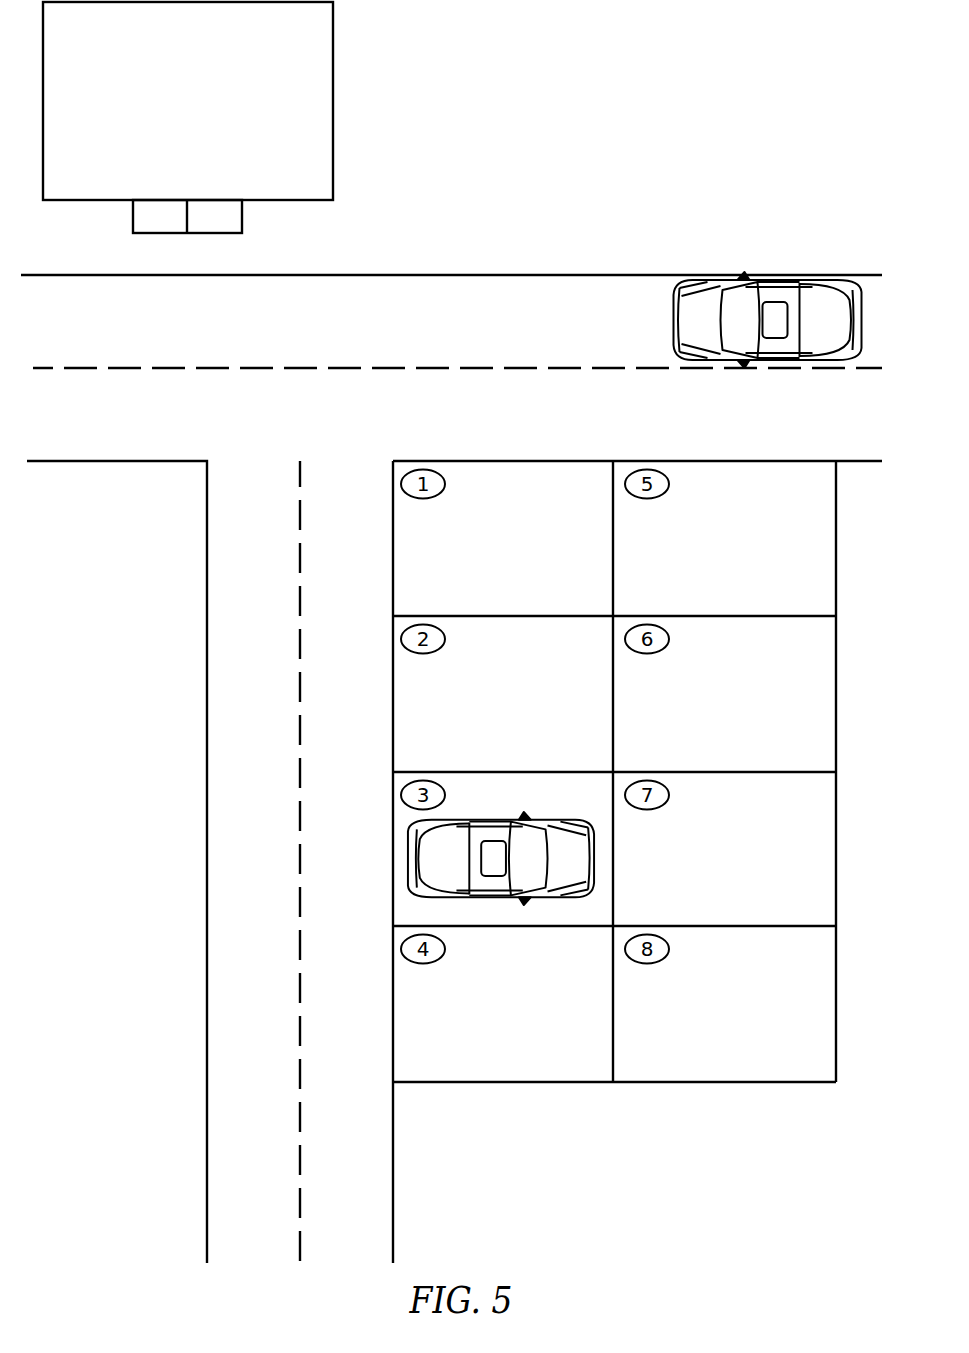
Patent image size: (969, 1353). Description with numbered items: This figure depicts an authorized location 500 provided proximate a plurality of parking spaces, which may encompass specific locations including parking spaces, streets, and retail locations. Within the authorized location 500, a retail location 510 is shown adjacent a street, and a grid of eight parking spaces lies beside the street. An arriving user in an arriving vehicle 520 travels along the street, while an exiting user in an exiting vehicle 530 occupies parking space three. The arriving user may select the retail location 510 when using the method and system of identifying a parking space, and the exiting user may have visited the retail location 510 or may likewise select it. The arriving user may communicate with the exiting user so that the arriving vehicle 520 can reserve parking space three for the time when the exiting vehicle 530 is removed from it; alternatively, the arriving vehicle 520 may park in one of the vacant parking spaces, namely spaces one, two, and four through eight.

The authorized location 500 is at (690, 55).
The retail location 510 is at (188, 117).
The arriving vehicle 520 is at (672, 320).
The exiting vehicle 530 is at (505, 820).